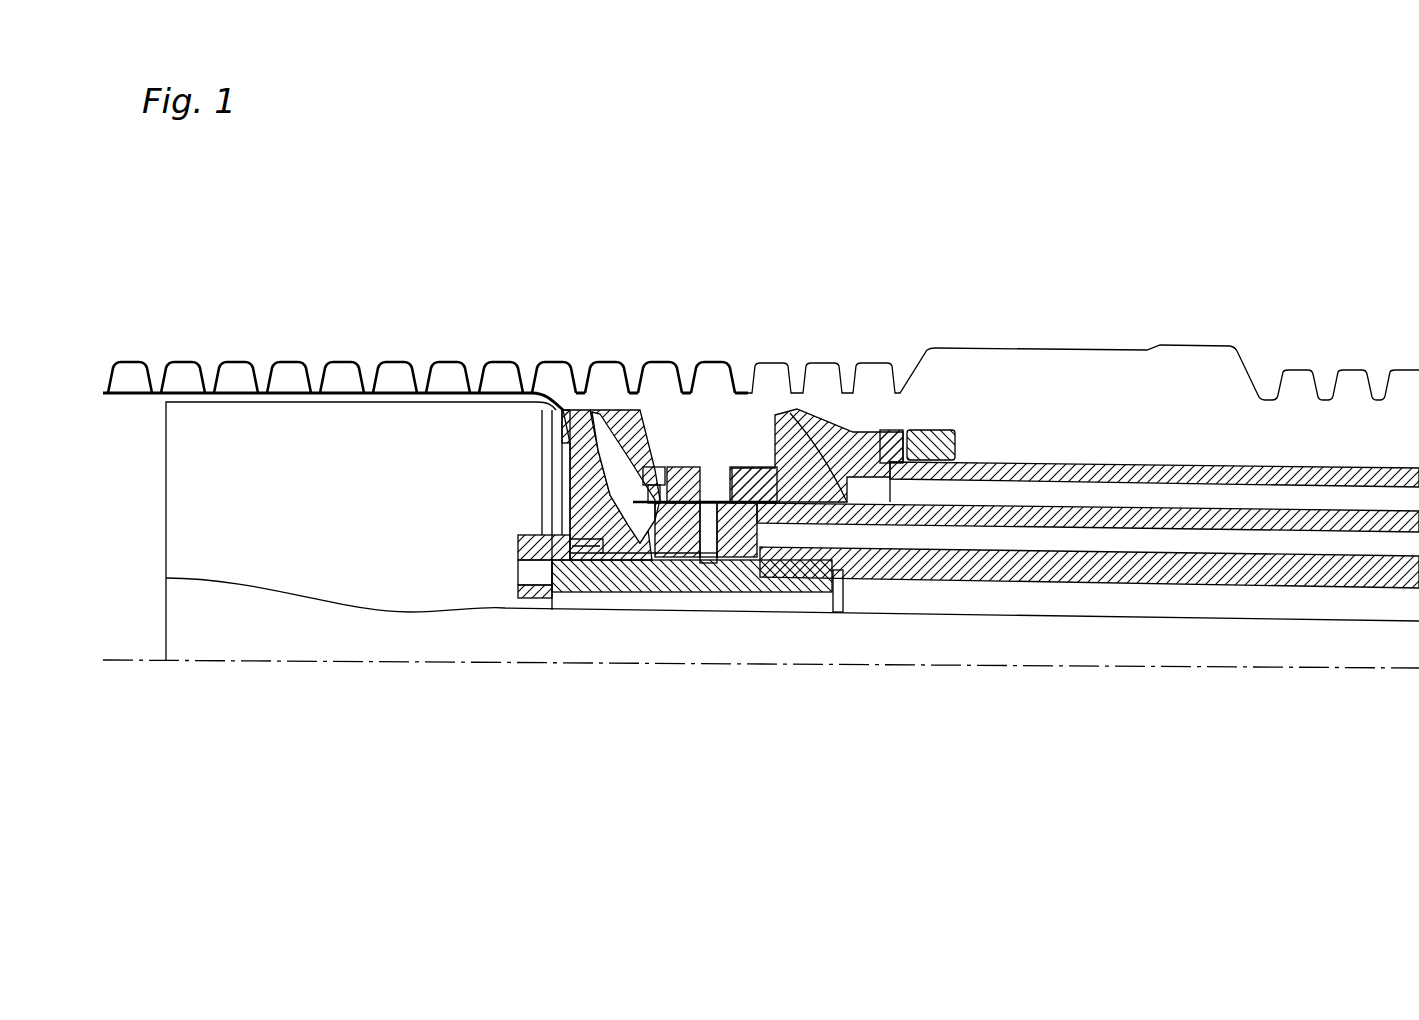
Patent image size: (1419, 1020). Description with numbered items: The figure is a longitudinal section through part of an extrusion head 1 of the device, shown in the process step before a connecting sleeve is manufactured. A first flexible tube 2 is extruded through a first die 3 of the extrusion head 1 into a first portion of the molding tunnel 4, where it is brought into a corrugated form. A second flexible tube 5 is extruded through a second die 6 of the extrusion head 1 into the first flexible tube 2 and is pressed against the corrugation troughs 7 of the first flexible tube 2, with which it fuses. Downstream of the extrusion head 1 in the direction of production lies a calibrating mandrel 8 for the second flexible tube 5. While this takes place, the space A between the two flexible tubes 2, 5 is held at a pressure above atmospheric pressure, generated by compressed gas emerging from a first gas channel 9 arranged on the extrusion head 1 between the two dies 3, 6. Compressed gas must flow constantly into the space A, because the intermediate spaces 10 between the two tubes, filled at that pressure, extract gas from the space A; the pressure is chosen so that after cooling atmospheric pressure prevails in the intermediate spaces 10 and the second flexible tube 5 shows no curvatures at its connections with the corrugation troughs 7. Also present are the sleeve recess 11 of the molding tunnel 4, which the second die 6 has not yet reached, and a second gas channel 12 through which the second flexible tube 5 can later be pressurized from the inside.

The extrusion head 1 is at (869, 405).
The first flexible tube 2 is at (757, 407).
The first die 3 is at (790, 413).
The molding tunnel 4 is at (981, 312).
The second flexible tube 5 is at (555, 410).
The second die 6 is at (573, 412).
The corrugation troughs 7 is at (685, 393).
The calibrating mandrel 8 is at (463, 448).
The first gas channel 9 is at (712, 490).
The intermediate spaces 10 is at (396, 373).
The sleeve recess 11 is at (1055, 350).
The second gas channel 12 is at (543, 478).
The space A is at (687, 433).